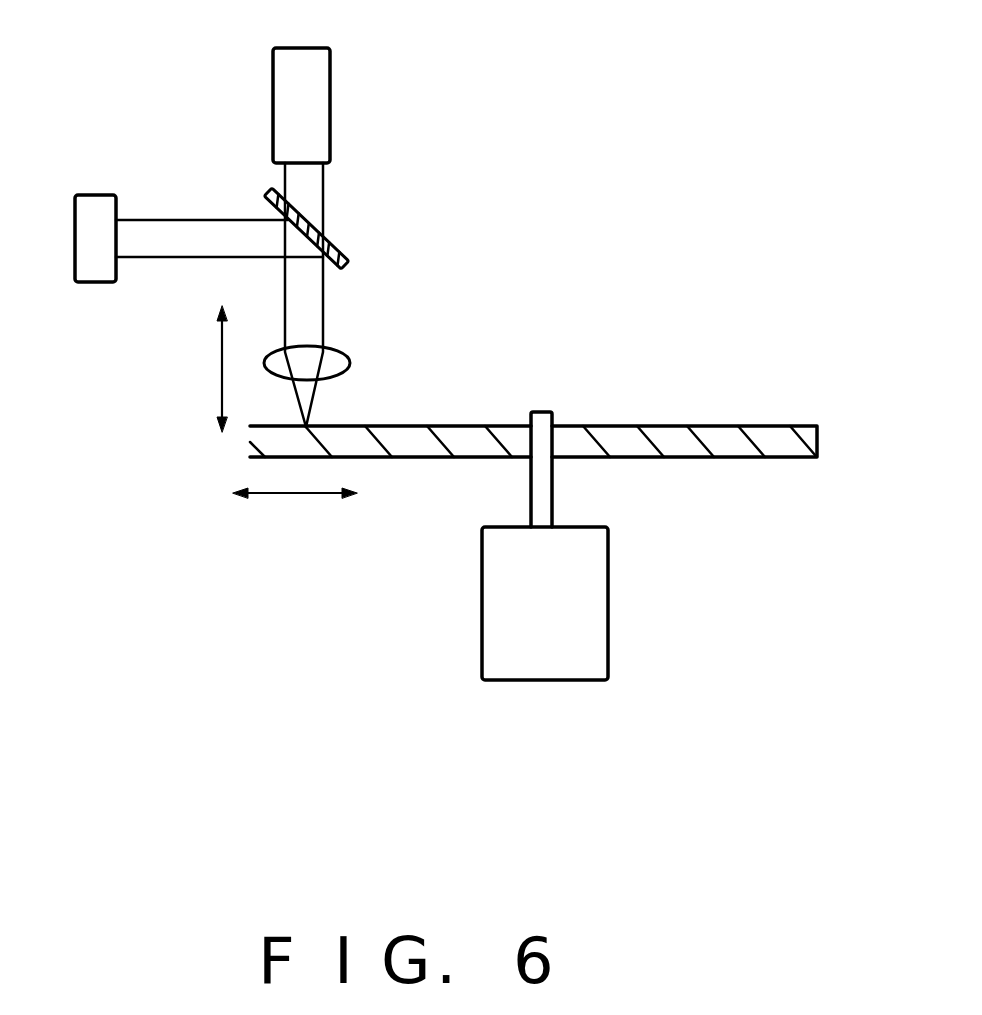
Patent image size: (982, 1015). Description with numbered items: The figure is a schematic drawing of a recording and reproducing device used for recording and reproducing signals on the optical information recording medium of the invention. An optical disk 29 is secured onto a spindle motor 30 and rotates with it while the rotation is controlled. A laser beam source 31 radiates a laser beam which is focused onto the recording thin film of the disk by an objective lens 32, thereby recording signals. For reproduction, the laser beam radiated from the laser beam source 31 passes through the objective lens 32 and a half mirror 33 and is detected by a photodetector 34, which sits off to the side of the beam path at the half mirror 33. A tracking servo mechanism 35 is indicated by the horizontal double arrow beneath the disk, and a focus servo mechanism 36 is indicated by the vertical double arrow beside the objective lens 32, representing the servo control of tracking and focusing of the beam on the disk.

The optical disk 29 is at (777, 442).
The spindle motor 30 is at (608, 606).
The laser beam source 31 is at (330, 102).
The objective lens 32 is at (352, 365).
The half mirror 33 is at (327, 243).
The photodetector 34 is at (90, 195).
The tracking servo mechanism 35 is at (292, 493).
The focus servo mechanism 36 is at (218, 378).